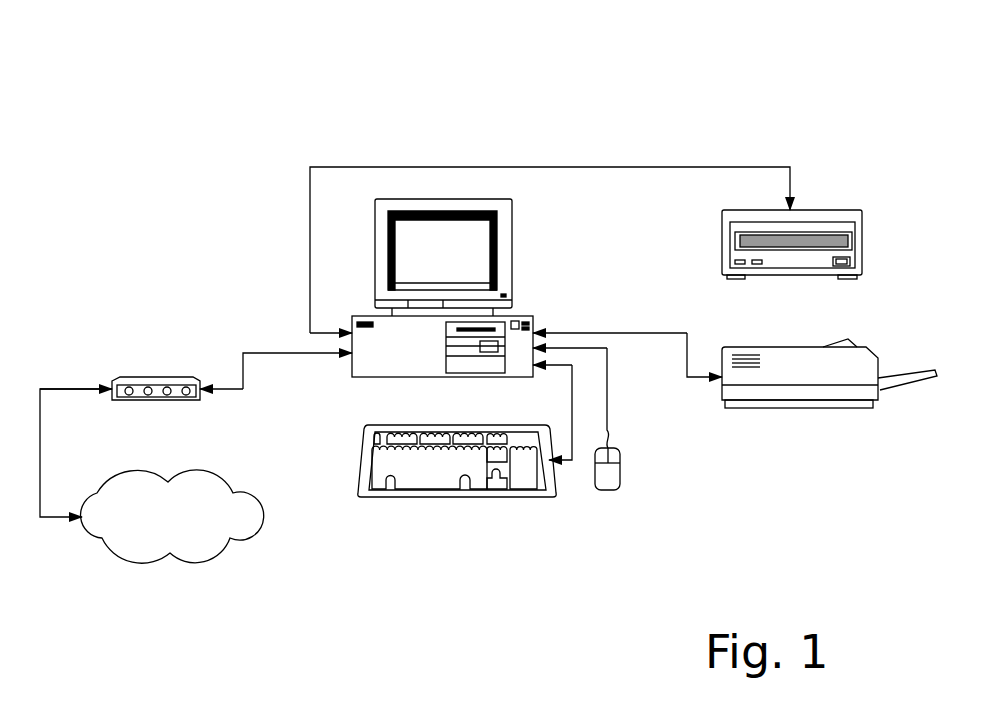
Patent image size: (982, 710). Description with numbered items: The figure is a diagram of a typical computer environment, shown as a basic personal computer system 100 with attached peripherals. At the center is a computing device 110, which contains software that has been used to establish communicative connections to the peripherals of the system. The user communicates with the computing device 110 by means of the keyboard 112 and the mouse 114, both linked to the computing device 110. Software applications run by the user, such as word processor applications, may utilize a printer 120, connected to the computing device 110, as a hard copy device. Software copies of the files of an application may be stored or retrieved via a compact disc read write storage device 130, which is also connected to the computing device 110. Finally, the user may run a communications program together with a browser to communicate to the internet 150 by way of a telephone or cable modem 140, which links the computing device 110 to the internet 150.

The personal computer system 100 is at (486, 38).
The computing device 110 is at (515, 265).
The keyboard 112 is at (393, 503).
The mouse 114 is at (622, 473).
The printer 120 is at (752, 345).
The compact disc read write (CDRW) storage device 130 is at (822, 210).
The modem 140 is at (130, 377).
The internet 150 is at (172, 516).